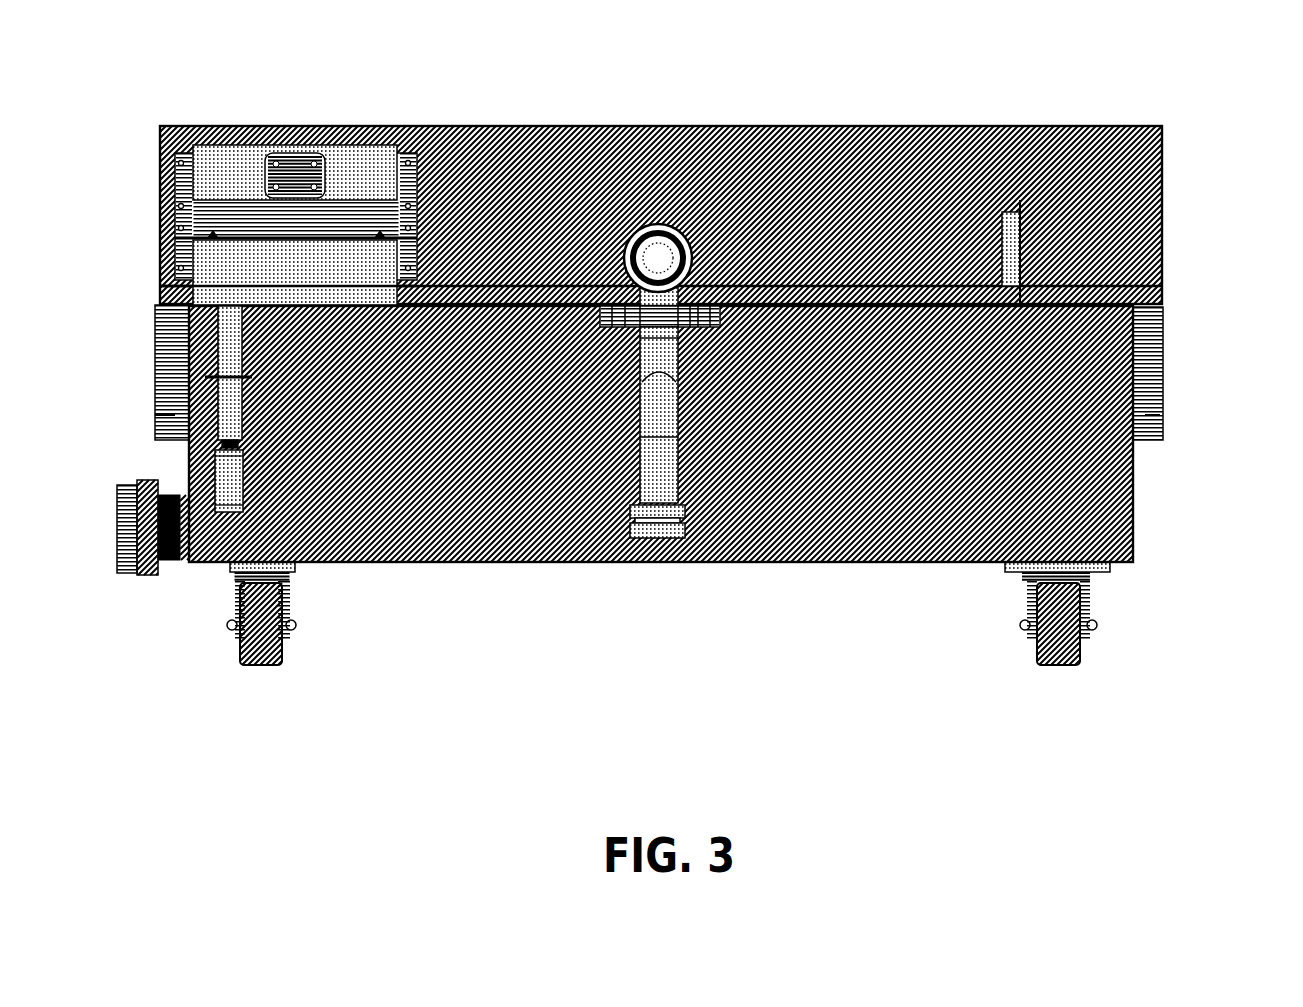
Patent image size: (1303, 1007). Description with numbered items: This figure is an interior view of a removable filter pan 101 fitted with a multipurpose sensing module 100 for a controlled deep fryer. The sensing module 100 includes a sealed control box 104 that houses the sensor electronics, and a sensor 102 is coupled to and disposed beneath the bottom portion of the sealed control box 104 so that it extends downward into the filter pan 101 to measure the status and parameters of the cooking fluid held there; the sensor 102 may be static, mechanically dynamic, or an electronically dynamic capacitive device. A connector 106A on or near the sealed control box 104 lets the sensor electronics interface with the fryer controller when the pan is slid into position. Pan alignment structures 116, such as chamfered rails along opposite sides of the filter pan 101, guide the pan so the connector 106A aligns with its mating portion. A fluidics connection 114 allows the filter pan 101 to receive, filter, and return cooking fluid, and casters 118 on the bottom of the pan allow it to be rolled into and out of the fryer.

The multipurpose sensing module 100 is at (669, 367).
The filter pan 101 is at (640, 486).
The sensor 102 is at (164, 409).
The sealed control box 104 is at (252, 167).
The connector 106A is at (341, 114).
The fluidics connection 114 is at (638, 177).
The pan alignment structures 116 is at (669, 216).
The casters 118 is at (661, 637).